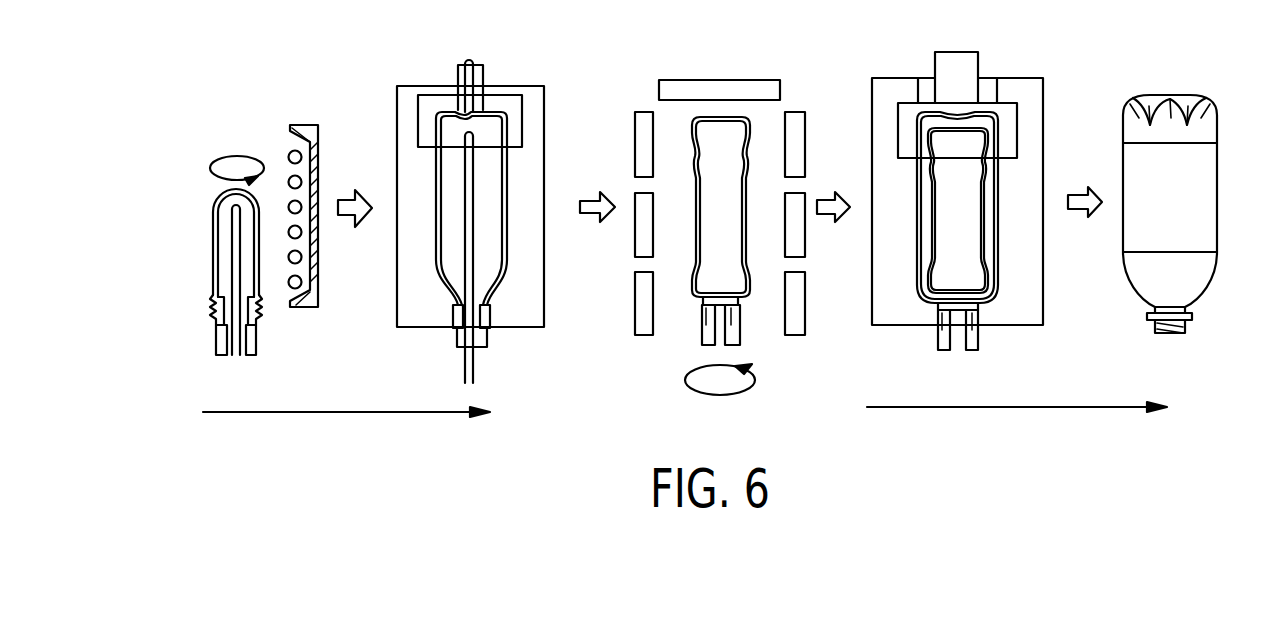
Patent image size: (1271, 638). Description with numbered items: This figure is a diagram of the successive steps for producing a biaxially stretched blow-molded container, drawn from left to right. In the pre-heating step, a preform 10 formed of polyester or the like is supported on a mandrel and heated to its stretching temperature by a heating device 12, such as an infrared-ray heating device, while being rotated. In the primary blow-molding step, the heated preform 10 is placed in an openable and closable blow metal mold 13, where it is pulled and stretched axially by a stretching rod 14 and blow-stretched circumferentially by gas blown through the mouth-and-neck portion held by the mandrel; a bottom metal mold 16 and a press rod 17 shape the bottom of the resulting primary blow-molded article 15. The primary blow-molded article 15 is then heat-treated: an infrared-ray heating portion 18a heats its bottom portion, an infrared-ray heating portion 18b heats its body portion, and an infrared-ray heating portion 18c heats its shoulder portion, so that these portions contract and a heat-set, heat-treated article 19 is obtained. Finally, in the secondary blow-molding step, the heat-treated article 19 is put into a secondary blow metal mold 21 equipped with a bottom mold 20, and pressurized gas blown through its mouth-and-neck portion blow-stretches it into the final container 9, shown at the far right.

The final container 9 is at (1217, 196).
The preform 10 is at (213, 228).
The heating device 12 is at (288, 157).
The blow metal mold 13 is at (410, 312).
The stretching rod 14 is at (465, 178).
The primary blow-molded article 15 is at (445, 248).
The bottom metal mold 16 is at (500, 100).
The press rod 17 is at (460, 106).
The infrared-ray heating portion 18a is at (722, 80).
The infrared-ray heating portion 18b is at (805, 143).
The infrared-ray heating portion 18c is at (634, 318).
The heat-treated article 19 is at (692, 245).
The bottom mold 20 is at (1003, 108).
The secondary blow metal mold 21 is at (870, 305).